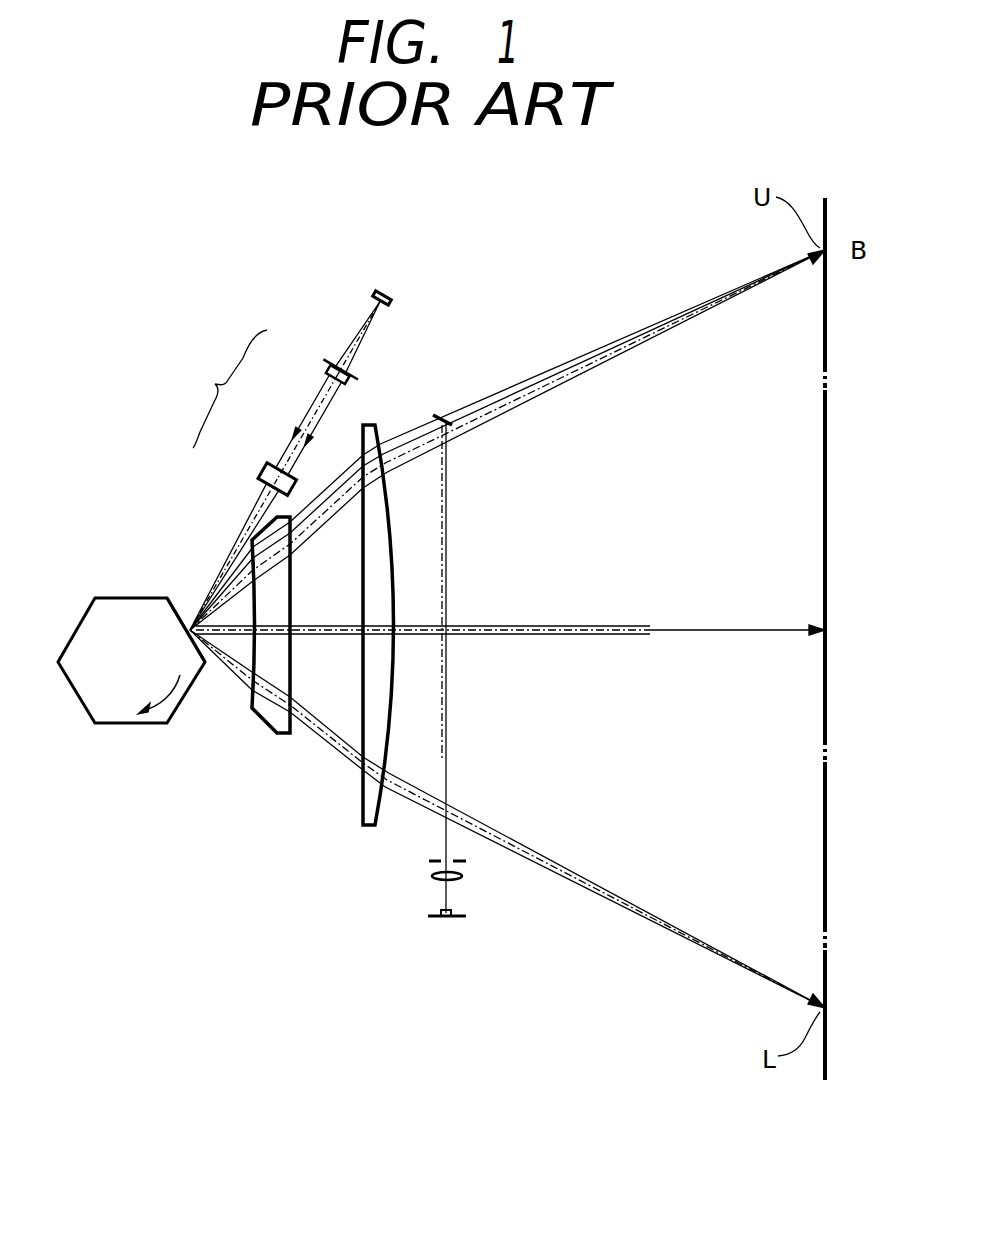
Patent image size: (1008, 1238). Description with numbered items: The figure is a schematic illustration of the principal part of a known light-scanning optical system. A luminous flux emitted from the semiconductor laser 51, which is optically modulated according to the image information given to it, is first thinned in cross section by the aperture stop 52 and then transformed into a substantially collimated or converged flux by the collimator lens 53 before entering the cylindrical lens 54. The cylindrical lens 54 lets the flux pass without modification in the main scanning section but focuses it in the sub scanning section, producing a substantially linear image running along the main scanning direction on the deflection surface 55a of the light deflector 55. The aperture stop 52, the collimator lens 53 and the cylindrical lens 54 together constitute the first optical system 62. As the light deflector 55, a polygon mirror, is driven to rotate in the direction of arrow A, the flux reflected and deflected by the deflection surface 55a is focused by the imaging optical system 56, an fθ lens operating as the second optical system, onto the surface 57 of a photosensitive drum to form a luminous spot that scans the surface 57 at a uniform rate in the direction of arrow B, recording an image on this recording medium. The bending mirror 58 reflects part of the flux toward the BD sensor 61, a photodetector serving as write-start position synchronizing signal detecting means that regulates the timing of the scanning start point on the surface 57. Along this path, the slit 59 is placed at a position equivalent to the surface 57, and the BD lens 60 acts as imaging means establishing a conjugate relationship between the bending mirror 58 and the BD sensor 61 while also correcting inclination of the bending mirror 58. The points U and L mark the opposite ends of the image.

The semiconductor laser 51 is at (387, 300).
The aperture stop 52 is at (352, 378).
The collimator lens 53 is at (322, 375).
The cylindrical lens 54 is at (262, 466).
The light deflector 55 is at (110, 598).
The deflection surface 55a is at (176, 600).
The imaging optical system 56 is at (370, 840).
The surface of photosensitive drum 57 is at (828, 215).
The bending mirror 58 is at (440, 418).
The slit 59 is at (467, 862).
The BD lens 60 is at (432, 876).
The BD sensor 61 is at (457, 918).
The first optical system 62 is at (281, 466).